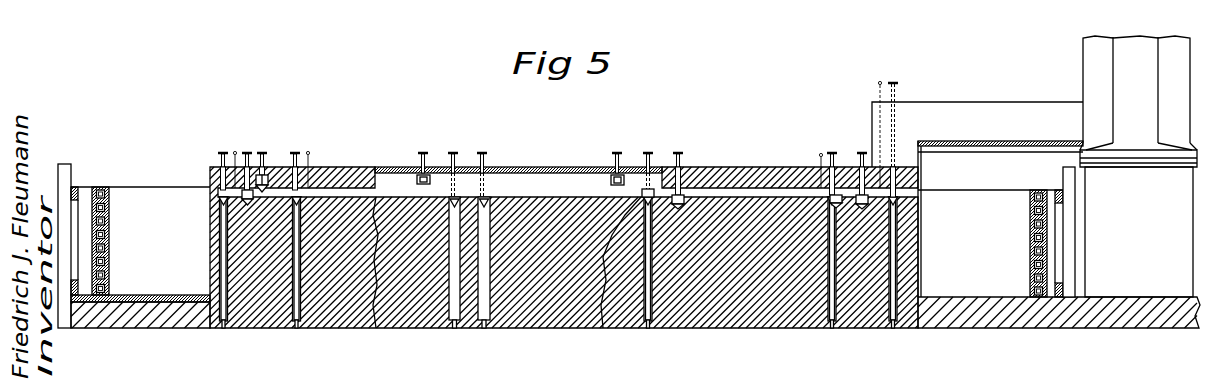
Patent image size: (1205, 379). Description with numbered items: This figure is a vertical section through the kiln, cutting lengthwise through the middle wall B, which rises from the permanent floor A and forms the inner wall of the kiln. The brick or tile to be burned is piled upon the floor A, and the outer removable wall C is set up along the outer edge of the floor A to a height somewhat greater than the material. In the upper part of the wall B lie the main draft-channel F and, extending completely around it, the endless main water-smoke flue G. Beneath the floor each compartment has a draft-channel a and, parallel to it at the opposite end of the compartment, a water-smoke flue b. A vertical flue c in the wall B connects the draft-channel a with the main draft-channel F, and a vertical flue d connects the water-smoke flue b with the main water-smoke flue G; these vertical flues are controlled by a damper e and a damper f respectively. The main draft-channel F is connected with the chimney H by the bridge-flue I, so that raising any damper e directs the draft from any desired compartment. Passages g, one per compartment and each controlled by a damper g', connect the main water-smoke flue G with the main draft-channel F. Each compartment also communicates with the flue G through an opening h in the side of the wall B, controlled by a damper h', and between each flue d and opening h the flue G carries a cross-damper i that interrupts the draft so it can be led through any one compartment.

The floor A is at (134, 246).
The wall B is at (558, 330).
The outer removable wall C is at (132, 242).
The main draft-channel F is at (537, 183).
The main water-smoke flue G is at (349, 195).
The chimney H is at (1138, 152).
The bridge-flue I is at (985, 102).
The draft-channel a is at (458, 326).
The water-smoke flue b is at (224, 327).
The vertical flue c is at (450, 318).
The vertical flue d is at (219, 252).
The damper e is at (457, 195).
The damper f is at (217, 153).
The passage g is at (448, 152).
The damper g' is at (438, 136).
The opening h is at (542, 174).
The damper h' is at (557, 154).
The cross-damper i is at (235, 151).